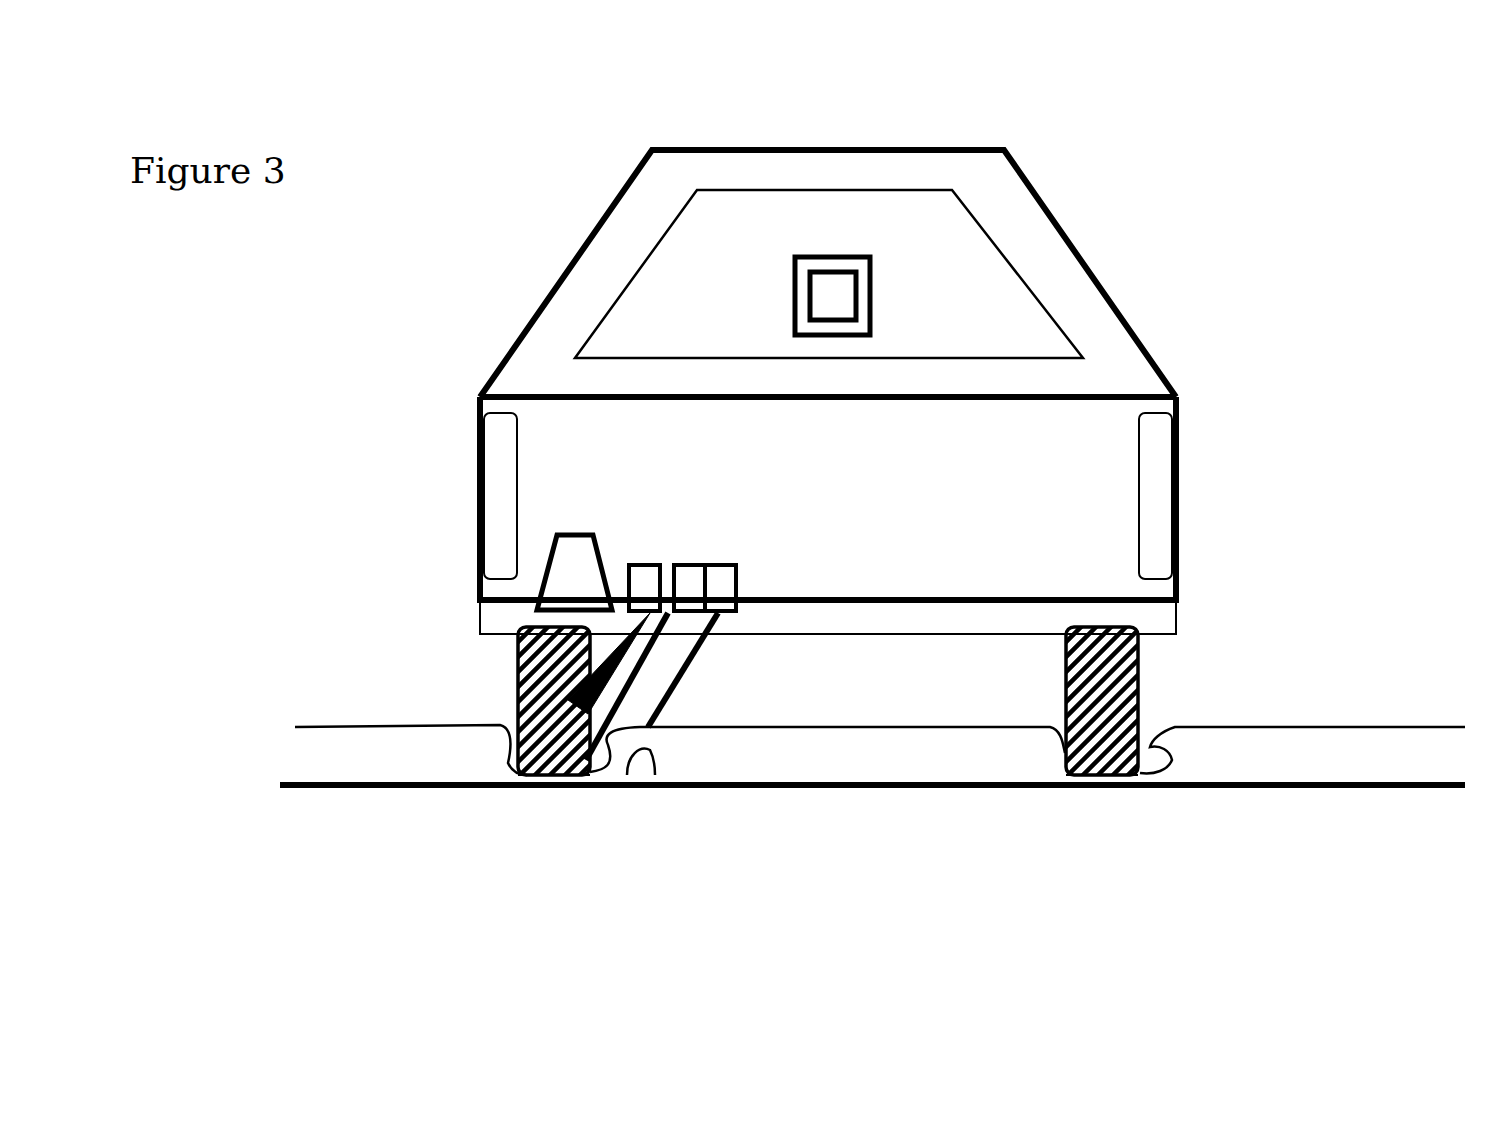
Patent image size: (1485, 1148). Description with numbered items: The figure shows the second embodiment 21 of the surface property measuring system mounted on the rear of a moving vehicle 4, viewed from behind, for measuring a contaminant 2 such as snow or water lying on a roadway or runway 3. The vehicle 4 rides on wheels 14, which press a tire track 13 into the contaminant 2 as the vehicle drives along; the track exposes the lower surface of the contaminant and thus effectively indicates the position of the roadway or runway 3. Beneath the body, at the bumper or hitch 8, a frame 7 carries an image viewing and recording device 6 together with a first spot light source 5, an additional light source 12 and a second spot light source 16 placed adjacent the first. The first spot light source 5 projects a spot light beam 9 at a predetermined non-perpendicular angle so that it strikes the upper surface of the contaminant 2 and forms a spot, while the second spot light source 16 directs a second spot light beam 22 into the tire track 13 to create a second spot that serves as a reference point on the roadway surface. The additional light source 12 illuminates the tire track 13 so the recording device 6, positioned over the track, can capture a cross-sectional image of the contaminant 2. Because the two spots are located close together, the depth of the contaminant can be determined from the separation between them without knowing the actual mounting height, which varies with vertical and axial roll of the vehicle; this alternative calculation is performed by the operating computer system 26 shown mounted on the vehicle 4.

The contaminant 2 is at (311, 772).
The roadway or runway 3 is at (330, 840).
The vehicle 4 is at (1053, 258).
The spot light source 5 is at (737, 563).
The image viewing and recording device 6 is at (581, 582).
The frame 7 is at (478, 598).
The bumper or hitch 8 is at (1162, 630).
The spot light beam 9 is at (690, 658).
The additional light source 12 is at (657, 563).
The tire track 13 is at (643, 663).
The wheels 14 is at (527, 778).
The second spot light source 16 is at (692, 563).
The second embodiment 21 is at (599, 474).
The second spot light beam 22 is at (663, 613).
The operating computer system 26 is at (837, 255).